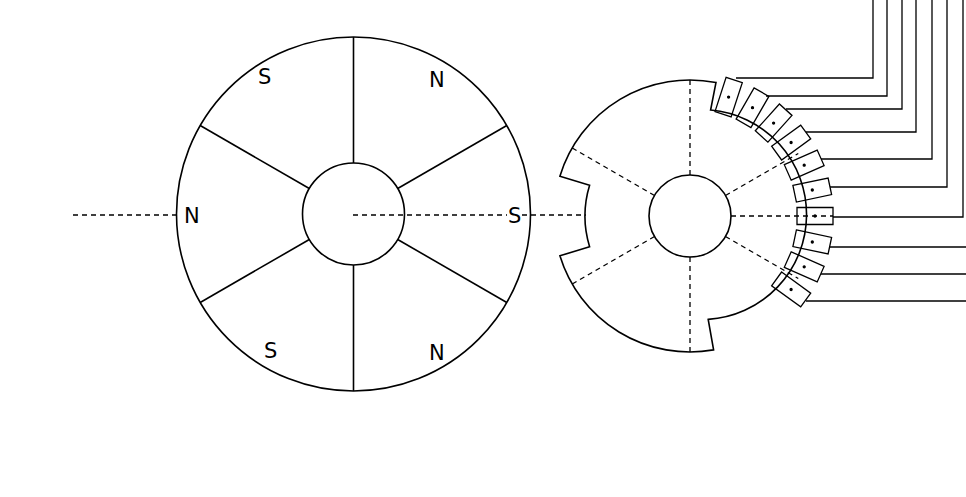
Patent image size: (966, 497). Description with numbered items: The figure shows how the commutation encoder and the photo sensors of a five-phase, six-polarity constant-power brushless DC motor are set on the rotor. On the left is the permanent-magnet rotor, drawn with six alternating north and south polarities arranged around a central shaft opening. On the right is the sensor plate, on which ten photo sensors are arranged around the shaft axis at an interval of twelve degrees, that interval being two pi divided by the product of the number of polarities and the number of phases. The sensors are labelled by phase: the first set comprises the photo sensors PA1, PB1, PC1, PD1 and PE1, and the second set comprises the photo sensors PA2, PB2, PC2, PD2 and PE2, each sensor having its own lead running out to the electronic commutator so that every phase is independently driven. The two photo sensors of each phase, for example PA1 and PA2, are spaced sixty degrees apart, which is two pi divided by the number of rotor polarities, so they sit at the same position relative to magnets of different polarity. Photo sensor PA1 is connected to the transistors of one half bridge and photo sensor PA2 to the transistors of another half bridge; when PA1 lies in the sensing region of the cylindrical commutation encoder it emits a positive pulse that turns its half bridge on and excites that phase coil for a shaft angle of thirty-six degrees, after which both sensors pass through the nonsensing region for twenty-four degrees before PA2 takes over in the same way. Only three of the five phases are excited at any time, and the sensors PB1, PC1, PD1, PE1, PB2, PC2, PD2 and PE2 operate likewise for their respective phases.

The photo sensor PA1 is at (794, 58).
The photo sensor PB1 is at (811, 64).
The photo sensor PC1 is at (828, 71).
The photo sensor PD1 is at (844, 80).
The photo sensor PE1 is at (858, 90).
The photo sensor PA2 is at (870, 101).
The photo sensor PB2 is at (880, 112).
The photo sensor PC2 is at (879, 242).
The photo sensor PD2 is at (875, 267).
The photo sensor PE2 is at (869, 289).